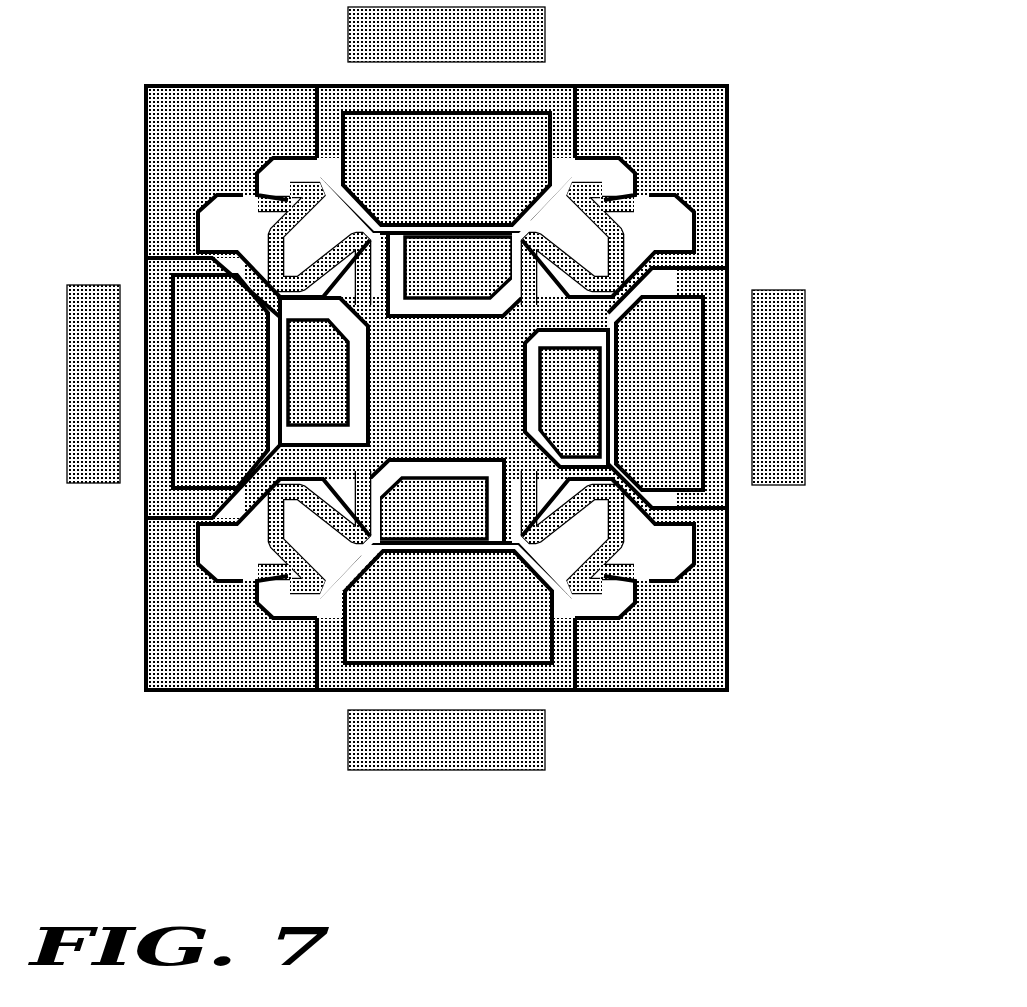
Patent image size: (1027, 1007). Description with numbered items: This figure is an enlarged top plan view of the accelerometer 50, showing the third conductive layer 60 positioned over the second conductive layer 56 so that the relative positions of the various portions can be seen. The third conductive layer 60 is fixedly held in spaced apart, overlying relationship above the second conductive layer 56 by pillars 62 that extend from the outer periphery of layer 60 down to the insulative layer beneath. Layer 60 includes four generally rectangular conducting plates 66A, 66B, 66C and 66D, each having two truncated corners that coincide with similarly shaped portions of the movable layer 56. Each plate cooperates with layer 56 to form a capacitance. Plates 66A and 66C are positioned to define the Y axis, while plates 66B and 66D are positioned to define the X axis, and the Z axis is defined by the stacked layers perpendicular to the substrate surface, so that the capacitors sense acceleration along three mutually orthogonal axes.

The accelerometer 50 is at (442, 886).
The second conductive layer 56 is at (562, 690).
The third conductive layer 60 is at (268, 86).
The pillars 62 is at (812, 372).
The conducting plate 66A is at (704, 475).
The conducting plate 66B is at (357, 663).
The conducting plate 66C is at (173, 288).
The conducting plate 66D is at (533, 113).